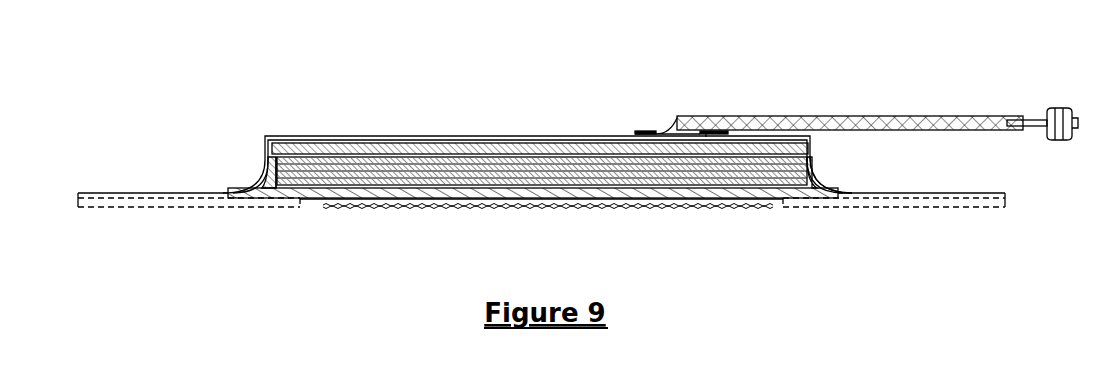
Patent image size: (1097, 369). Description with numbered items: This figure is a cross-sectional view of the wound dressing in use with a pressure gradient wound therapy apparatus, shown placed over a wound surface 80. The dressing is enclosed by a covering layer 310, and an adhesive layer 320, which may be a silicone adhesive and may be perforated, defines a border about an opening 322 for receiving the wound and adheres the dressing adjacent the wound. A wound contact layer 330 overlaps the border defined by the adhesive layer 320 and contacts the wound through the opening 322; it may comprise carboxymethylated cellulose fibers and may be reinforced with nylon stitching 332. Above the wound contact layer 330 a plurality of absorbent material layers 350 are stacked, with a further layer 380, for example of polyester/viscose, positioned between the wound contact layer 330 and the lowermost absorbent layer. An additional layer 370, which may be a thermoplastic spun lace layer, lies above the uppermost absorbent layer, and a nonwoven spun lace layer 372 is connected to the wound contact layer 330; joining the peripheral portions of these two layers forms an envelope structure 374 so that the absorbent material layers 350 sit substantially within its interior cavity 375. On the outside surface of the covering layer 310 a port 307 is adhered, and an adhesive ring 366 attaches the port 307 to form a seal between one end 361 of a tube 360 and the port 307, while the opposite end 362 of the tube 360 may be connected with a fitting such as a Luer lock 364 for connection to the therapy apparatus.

The skin surface 80 is at (463, 208).
The port 307 is at (831, 100).
The covering layer 310 is at (261, 135).
The adhesive layer 320 is at (178, 213).
The opening 322 is at (317, 210).
The wound contact layer 330 is at (580, 141).
The reinforcing nylon stitching 332 is at (739, 194).
The absorbent material layers 350 is at (513, 170).
The tube 360 is at (840, 112).
The end of the tube 361 is at (699, 110).
The opposite end of the tube 362 is at (995, 112).
The Luer lock 364 is at (1043, 110).
The adhesive ring 366 is at (638, 124).
The additional layer 370 is at (811, 155).
The nonwoven spun lace layer 372 is at (831, 179).
The envelope structure 374 is at (252, 170).
The interior cavity 375 is at (262, 181).
The further layer 380 is at (580, 196).